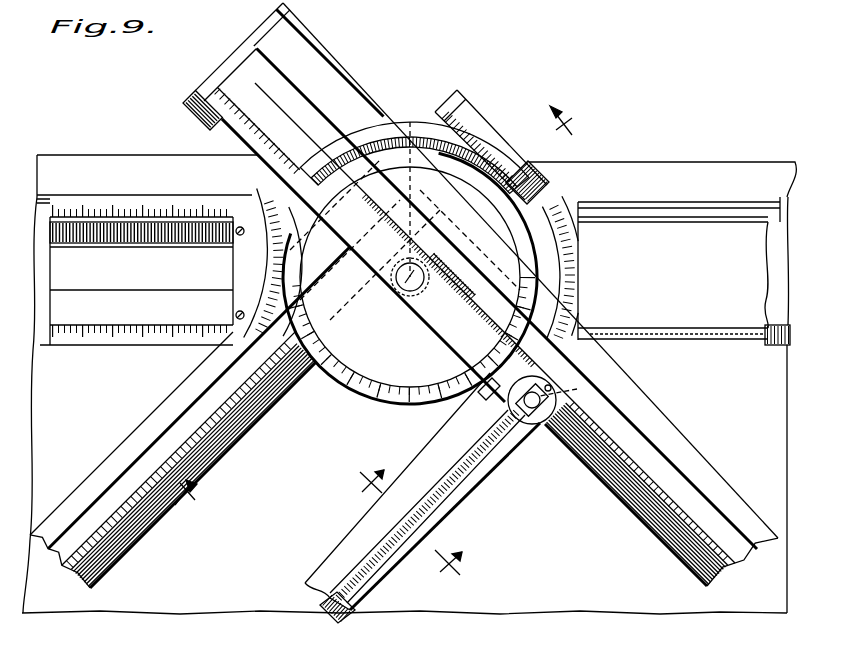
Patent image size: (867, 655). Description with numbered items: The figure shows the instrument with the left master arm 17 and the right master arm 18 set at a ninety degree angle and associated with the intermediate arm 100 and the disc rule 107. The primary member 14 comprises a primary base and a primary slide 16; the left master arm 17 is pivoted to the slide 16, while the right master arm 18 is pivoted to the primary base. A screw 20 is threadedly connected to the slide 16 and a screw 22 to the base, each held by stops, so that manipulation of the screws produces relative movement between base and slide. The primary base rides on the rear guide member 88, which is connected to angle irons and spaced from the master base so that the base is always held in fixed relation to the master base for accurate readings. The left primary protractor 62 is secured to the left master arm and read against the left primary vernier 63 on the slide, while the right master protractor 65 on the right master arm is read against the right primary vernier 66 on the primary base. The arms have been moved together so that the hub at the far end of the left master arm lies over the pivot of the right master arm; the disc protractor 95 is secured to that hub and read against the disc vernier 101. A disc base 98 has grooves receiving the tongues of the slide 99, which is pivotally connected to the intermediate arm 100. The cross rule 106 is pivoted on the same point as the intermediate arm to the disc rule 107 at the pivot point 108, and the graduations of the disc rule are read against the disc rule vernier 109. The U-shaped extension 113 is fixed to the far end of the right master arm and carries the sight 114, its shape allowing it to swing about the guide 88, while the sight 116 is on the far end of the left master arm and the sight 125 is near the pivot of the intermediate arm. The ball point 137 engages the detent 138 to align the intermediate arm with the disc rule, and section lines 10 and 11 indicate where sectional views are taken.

The section line 10- 10 is at (386, 311).
The section line 11- 11 is at (402, 531).
The primary member 14 is at (160, 202).
The primary slide 16 is at (683, 268).
The left master arm 17 is at (147, 416).
The right master arm 18 is at (683, 452).
The screw 20 is at (115, 235).
The screw 22 is at (770, 347).
The left primary protractor 62 is at (278, 192).
The left primary vernier 63 is at (237, 275).
The right master protractor 65 is at (573, 255).
The right primary vernier 66 is at (573, 237).
The rear guide member 88 is at (677, 172).
The disc protractor 95 is at (373, 393).
The disc base 98 is at (440, 356).
The slide 99 is at (225, 122).
The intermediate arm 100 is at (500, 468).
The disc vernier 101 is at (390, 120).
The cross rule 106 is at (320, 604).
The disc rule 107 is at (323, 124).
The pivot point 108 is at (578, 390).
The disc rule vernier 109 is at (447, 257).
The extension 113 is at (333, 57).
The sight 114 is at (212, 72).
The sight 116 is at (505, 150).
The sight 125 is at (547, 425).
The ball point 137 is at (478, 400).
The detent 138 is at (551, 388).